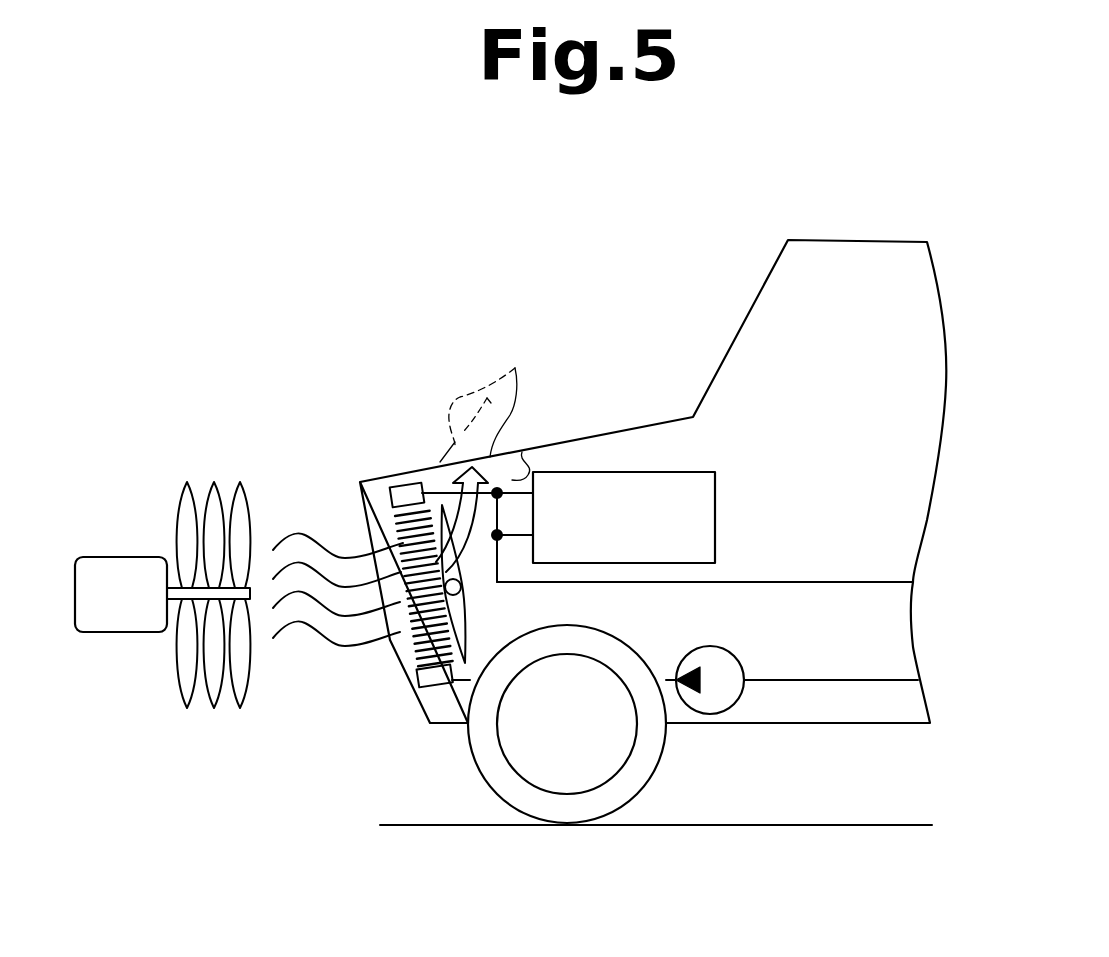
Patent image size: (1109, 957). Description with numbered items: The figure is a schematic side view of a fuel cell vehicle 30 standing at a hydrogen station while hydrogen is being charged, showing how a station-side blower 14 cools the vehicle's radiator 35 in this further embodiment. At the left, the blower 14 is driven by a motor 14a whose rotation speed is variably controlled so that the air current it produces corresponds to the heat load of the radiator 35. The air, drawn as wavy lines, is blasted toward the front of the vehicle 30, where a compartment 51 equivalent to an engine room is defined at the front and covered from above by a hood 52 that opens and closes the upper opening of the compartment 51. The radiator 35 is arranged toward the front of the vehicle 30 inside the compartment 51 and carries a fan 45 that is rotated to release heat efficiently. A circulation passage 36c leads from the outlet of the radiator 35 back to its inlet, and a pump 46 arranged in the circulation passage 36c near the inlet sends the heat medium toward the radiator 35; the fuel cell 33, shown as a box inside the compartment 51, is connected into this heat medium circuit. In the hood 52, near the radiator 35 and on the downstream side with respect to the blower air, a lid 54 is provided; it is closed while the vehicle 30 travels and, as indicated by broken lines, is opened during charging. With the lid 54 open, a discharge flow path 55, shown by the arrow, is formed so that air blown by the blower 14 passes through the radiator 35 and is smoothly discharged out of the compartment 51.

The blower 14 is at (193, 430).
The motor 14a is at (122, 577).
The vehicle 30 is at (745, 297).
The fuel cell 33 is at (716, 512).
The radiator 35 is at (434, 703).
The circulation passage 36c is at (863, 678).
The fan 45 is at (465, 625).
The pump 46 is at (742, 657).
The compartment 51 is at (522, 452).
The hood 52 is at (380, 478).
The lid 54 is at (489, 392).
The discharge flow path 55 is at (456, 512).